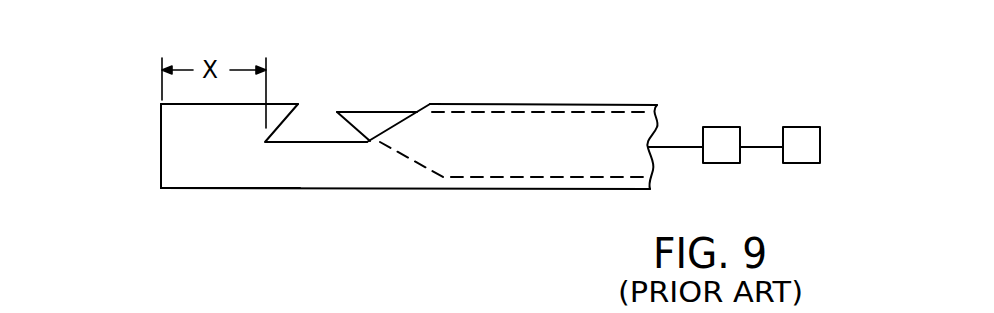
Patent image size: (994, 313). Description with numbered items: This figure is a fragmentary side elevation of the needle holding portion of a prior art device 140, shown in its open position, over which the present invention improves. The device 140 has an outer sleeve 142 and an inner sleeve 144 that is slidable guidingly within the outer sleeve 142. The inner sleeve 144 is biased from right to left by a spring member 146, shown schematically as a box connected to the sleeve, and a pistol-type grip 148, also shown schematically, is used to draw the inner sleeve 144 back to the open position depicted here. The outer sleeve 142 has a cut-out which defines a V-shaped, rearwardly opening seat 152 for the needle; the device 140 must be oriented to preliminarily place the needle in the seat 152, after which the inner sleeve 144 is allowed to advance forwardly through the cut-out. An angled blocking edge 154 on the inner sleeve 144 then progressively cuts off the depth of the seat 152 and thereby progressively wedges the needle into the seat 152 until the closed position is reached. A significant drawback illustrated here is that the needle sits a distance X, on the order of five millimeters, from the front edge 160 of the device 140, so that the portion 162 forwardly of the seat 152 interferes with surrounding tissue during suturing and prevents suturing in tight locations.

The prior art device 140 is at (586, 66).
The outer sleeve 142 is at (197, 150).
The inner sleeve 144 is at (380, 120).
The spring member 146 is at (722, 133).
The pistol-type grip 148 is at (798, 133).
The seat 152 is at (278, 126).
The angled blocking edge 154 is at (340, 122).
The front edge 160 is at (160, 140).
The portion forwardly of the seat 162 is at (175, 140).